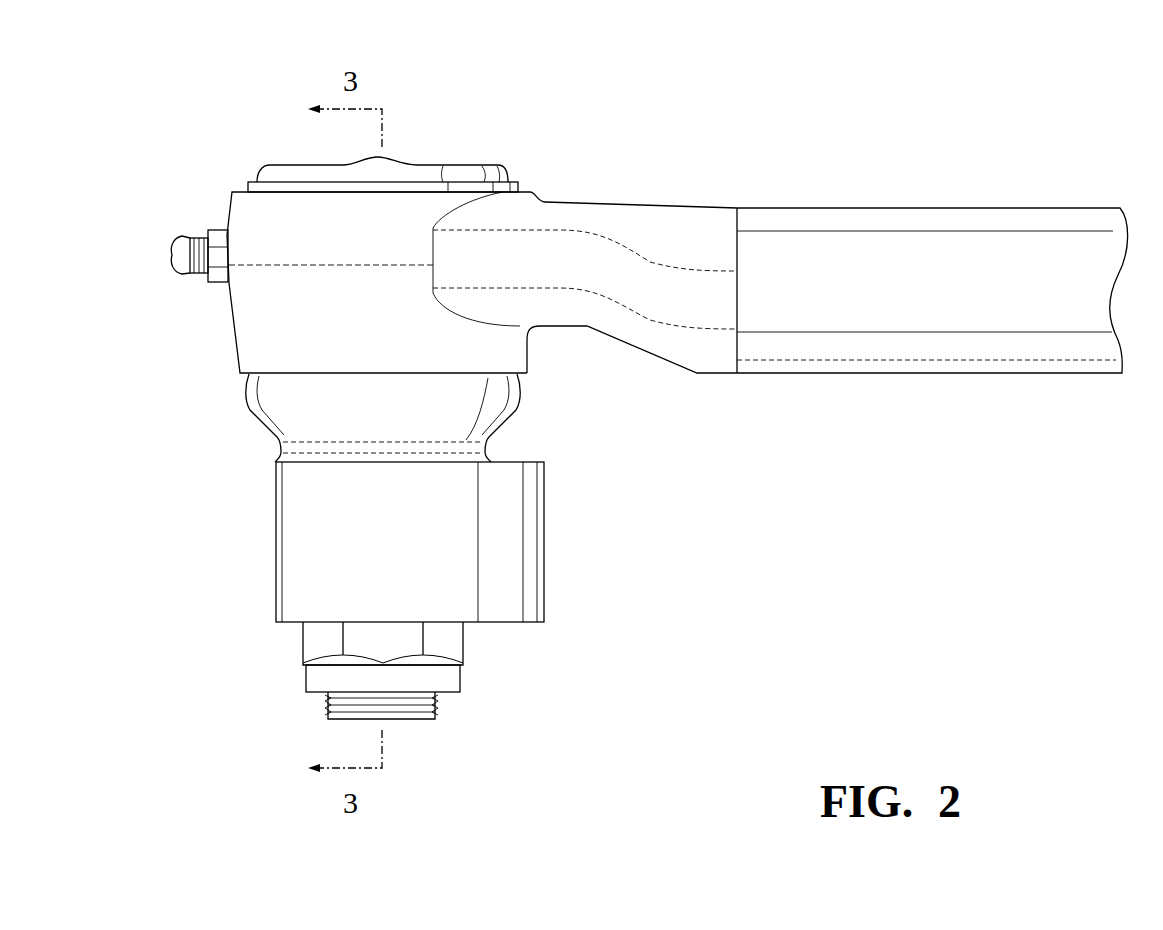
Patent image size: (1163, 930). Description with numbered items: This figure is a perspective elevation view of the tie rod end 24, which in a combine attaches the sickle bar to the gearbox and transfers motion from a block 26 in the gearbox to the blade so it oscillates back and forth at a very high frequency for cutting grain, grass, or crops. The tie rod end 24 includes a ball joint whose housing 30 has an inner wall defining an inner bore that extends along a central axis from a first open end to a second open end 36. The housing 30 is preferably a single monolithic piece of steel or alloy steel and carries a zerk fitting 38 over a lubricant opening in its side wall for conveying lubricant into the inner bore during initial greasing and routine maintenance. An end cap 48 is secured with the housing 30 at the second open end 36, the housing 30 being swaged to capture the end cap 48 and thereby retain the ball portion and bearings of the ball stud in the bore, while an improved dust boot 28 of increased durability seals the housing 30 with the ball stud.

The tie rod end 24 is at (244, 132).
The block 26 is at (532, 549).
The dust boot 28 is at (528, 405).
The housing 30 is at (258, 308).
The second open end 36 is at (492, 165).
The zerk fitting 38 is at (185, 233).
The end cap 48 is at (388, 157).